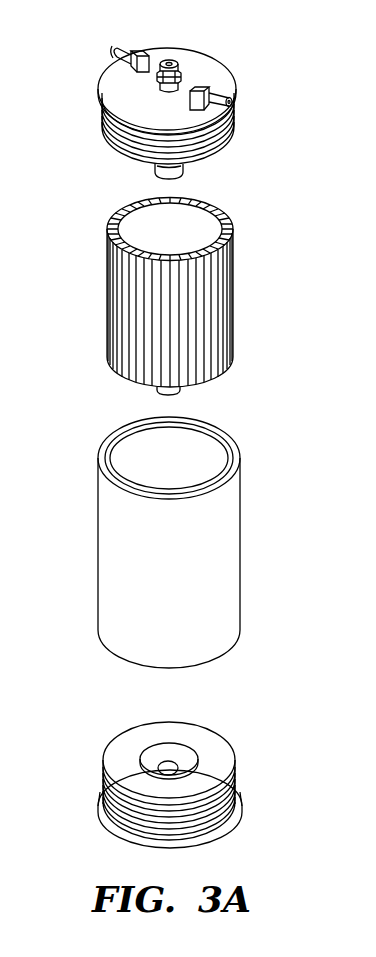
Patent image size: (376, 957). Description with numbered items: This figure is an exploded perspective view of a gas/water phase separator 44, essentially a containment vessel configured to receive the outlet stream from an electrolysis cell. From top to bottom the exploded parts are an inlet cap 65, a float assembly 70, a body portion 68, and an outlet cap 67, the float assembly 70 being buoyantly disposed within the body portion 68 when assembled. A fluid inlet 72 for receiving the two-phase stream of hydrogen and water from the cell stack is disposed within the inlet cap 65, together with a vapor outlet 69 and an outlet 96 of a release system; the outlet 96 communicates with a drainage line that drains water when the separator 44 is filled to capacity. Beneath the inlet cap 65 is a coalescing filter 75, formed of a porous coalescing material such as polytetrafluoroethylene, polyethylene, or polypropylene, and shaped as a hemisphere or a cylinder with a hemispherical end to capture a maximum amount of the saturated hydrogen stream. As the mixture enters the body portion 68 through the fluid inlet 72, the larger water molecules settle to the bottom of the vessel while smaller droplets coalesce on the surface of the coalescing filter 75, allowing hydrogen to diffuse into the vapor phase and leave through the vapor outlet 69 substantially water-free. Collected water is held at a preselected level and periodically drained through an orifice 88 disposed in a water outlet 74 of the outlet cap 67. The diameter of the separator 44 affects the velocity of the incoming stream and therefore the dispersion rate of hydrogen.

The separator 44 is at (336, 140).
The inlet cap 65 is at (98, 101).
The vapor outlet 69 is at (181, 73).
The outlet 96 is at (134, 52).
The fluid inlet 72 is at (233, 101).
The coalescing filter 75 is at (161, 176).
The float assembly 70 is at (247, 202).
The body portion 68 is at (107, 582).
The outlet cap 67 is at (102, 780).
The water outlet 74 is at (185, 760).
The orifice 88 is at (166, 768).